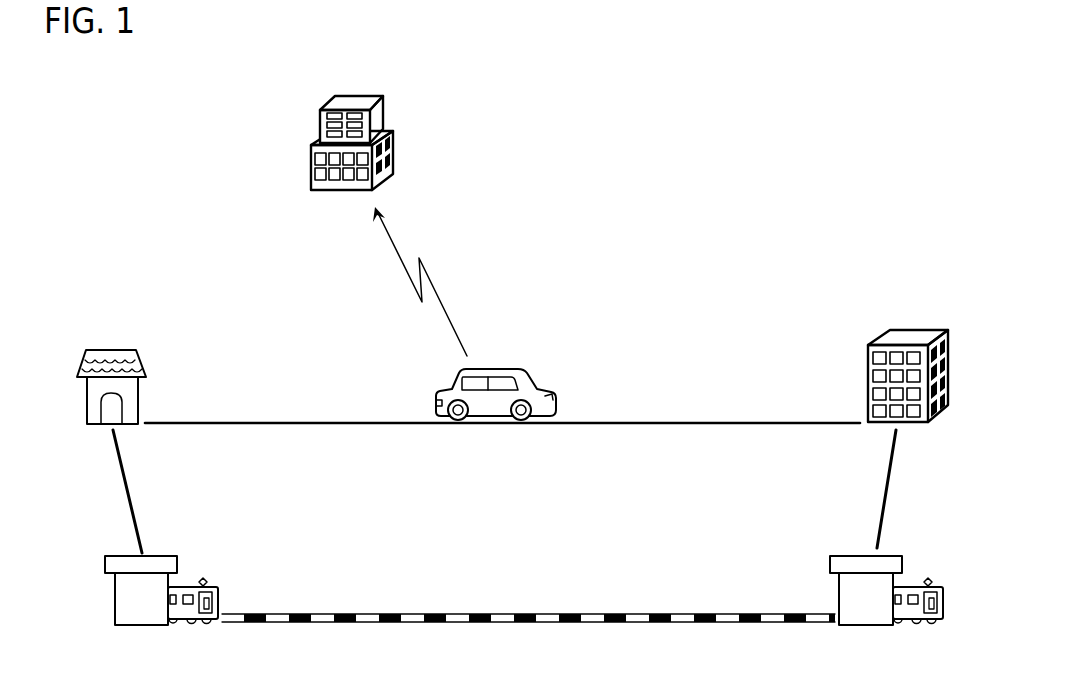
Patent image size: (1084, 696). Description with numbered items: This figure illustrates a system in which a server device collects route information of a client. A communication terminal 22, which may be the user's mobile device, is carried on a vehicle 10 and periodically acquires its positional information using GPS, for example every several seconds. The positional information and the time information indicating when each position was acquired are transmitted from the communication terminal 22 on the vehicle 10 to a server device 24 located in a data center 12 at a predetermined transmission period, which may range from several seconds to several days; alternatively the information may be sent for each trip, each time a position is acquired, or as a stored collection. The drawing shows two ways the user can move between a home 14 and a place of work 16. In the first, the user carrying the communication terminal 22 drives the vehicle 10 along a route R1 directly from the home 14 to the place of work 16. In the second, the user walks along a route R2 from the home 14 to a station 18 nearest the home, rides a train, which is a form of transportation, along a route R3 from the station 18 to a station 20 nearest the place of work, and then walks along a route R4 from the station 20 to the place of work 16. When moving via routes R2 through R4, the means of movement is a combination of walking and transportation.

The vehicle 10 is at (500, 368).
The communication terminal 22 is at (496, 394).
The data center 12 is at (358, 98).
The server device 24 is at (352, 143).
The home 14 is at (108, 350).
The place of work 16 is at (916, 338).
The station nearest the home 18 is at (139, 626).
The station nearest the place of work 20 is at (866, 626).
The route R1 is at (681, 421).
The route R2 is at (122, 490).
The route R3 is at (500, 624).
The route R4 is at (886, 490).